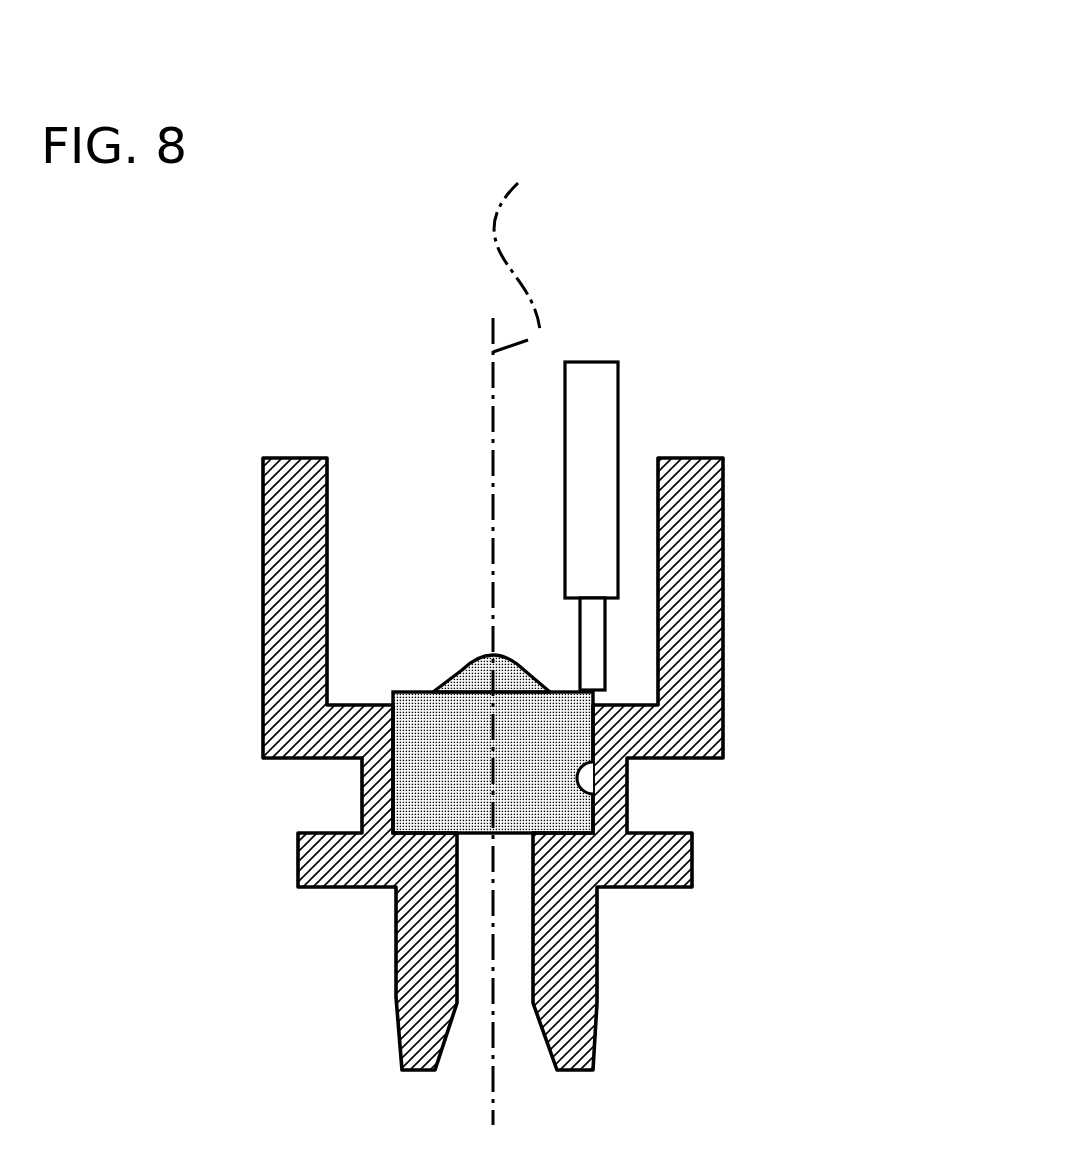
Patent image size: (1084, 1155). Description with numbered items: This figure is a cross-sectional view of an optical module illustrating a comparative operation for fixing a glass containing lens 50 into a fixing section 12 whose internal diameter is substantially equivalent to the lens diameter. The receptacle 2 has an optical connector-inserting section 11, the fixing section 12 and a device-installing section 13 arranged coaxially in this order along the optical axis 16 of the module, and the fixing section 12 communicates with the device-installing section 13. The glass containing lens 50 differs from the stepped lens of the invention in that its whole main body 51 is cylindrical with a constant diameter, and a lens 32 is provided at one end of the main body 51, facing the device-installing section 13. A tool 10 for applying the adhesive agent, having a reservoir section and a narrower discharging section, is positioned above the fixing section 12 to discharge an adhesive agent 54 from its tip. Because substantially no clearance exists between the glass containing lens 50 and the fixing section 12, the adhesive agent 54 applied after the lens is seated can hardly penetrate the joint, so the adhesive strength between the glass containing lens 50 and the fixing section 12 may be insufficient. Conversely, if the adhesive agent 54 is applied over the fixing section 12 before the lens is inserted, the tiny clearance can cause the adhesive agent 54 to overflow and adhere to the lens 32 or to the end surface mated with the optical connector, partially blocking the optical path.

The receptacle 2 is at (722, 537).
The tool for applying the adhesive agent 10 is at (590, 372).
The optical connector-inserting section 11 is at (458, 920).
The fixing section 12 is at (597, 797).
The device-installing section 13 is at (327, 530).
The optical axis 16 is at (532, 231).
The lens 32 is at (470, 668).
The glass containing lens 50 is at (420, 690).
The main body 51 is at (393, 788).
The adhesive agent 54 is at (660, 705).